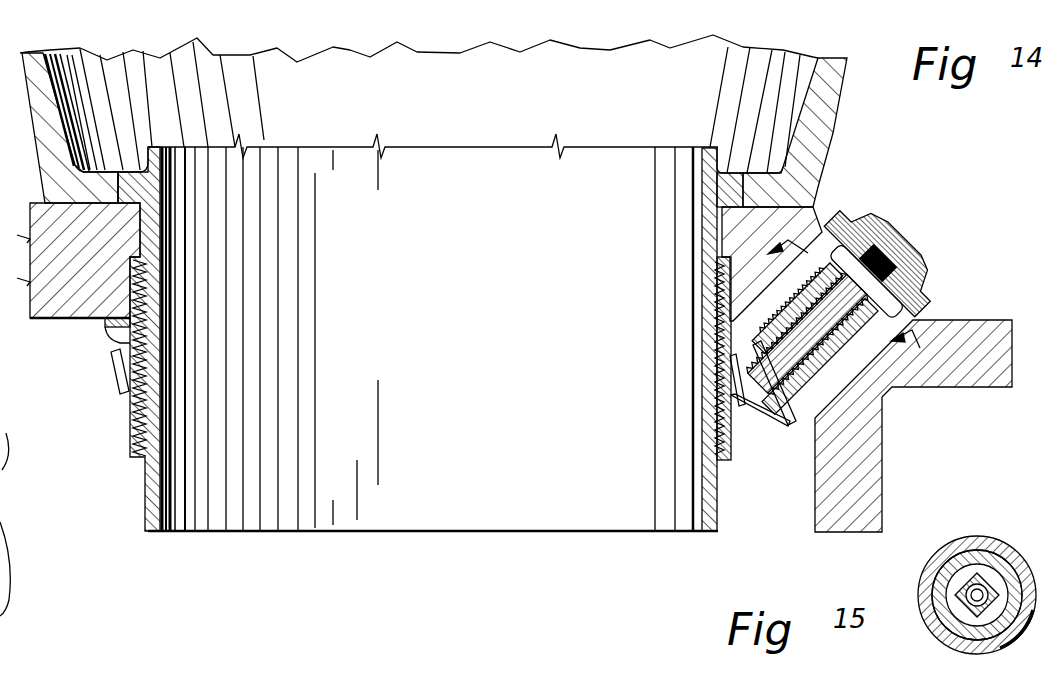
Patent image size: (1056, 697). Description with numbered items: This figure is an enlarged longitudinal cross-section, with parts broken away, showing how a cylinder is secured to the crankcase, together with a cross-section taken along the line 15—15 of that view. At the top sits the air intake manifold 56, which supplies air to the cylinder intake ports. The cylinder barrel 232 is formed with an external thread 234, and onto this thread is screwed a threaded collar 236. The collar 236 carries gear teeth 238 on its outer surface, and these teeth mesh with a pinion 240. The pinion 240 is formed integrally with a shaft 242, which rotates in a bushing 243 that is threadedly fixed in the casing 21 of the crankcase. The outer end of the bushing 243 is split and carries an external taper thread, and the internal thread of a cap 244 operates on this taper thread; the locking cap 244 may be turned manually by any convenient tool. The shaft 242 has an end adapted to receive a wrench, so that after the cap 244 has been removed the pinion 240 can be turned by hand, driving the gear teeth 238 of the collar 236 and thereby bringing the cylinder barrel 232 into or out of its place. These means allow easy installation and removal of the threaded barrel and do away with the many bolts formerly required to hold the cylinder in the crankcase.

In FIG. 14, the air intake manifold 56 is at (820, 135).
In FIG. 14, the casing 21 is at (873, 488).
In FIG. 14, the cylinder barrel 232 is at (718, 523).
In FIG. 14, the external thread 234 is at (132, 457).
In FIG. 14, the threaded collar 236 is at (728, 462).
In FIG. 14, the gear teeth 238 is at (117, 390).
In FIG. 14, the pinion 240 is at (775, 415).
In FIG. 14, the shaft 242 is at (832, 390).
In FIG. 15, the shaft 242 is at (967, 553).
In FIG. 14, the bushing 243 is at (843, 248).
In FIG. 15, the bushing 243 is at (947, 567).
In FIG. 14, the cap 244 is at (922, 312).
In FIG. 15, the cap 244 is at (1017, 522).
In FIG. 14, the section line 15— 15 is at (835, 312).